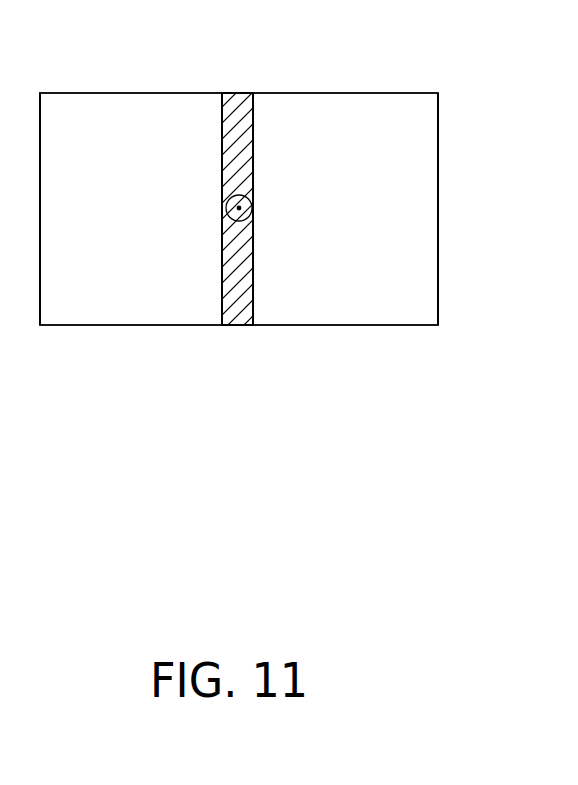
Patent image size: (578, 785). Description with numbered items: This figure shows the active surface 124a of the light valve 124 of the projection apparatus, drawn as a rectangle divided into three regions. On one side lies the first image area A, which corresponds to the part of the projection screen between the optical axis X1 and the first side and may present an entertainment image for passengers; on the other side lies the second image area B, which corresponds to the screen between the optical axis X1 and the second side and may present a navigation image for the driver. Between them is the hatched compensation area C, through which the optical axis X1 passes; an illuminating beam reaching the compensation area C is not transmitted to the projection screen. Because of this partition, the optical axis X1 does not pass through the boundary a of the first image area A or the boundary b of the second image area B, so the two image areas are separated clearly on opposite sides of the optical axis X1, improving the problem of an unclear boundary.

The light valve 124 is at (438, 219).
The active surface 124a is at (408, 297).
The optical axis X1 is at (240, 207).
The first image area A is at (390, 209).
The second image area B is at (96, 209).
The compensation area C is at (237, 211).
The boundary of the first image area a is at (253, 290).
The boundary of the second image area b is at (222, 290).